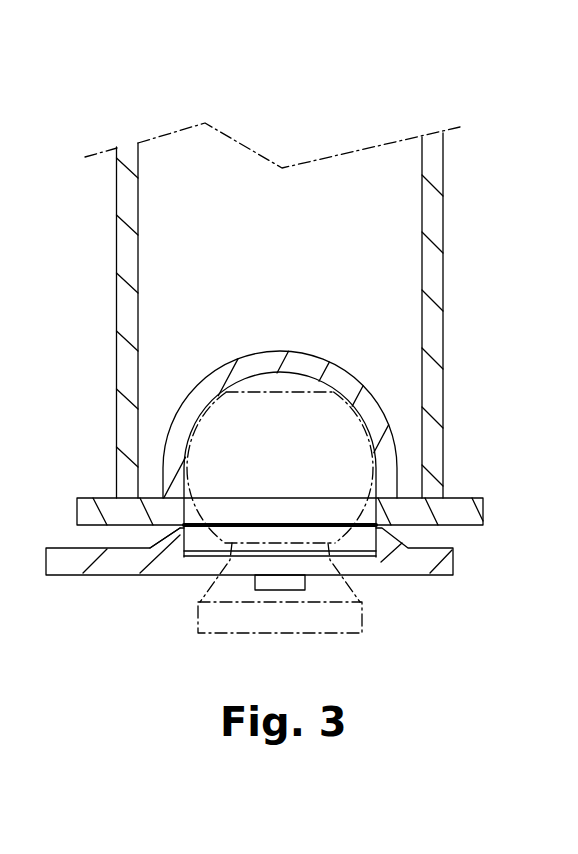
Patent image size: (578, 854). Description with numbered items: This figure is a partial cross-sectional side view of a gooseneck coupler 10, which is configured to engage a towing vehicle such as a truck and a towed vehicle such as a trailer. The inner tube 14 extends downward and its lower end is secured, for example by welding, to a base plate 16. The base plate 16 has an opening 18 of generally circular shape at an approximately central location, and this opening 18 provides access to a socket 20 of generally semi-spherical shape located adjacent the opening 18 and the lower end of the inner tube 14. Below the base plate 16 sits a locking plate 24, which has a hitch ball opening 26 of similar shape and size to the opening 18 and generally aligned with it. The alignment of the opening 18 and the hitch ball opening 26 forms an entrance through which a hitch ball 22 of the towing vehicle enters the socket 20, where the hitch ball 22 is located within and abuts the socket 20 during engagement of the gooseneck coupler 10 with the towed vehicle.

The gooseneck coupler 10 is at (439, 92).
The inner tube 14 is at (427, 272).
The base plate 16 is at (460, 512).
The opening 18 is at (360, 528).
The socket 20 is at (368, 410).
The hitch ball 22 is at (242, 620).
The locking plate 24 is at (430, 560).
The hitch ball opening 26 is at (183, 542).